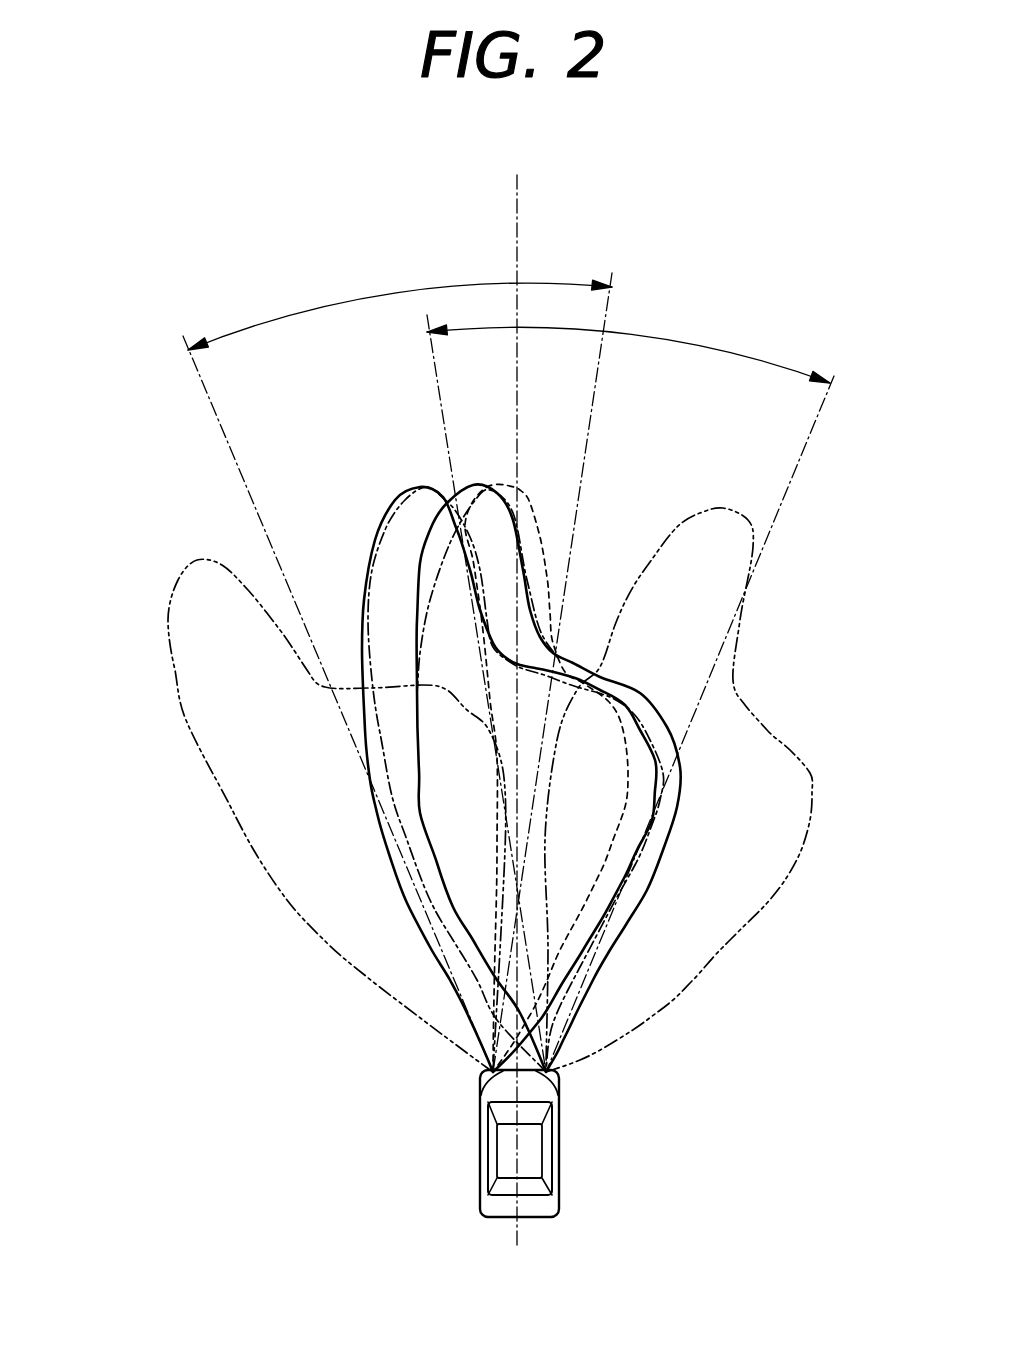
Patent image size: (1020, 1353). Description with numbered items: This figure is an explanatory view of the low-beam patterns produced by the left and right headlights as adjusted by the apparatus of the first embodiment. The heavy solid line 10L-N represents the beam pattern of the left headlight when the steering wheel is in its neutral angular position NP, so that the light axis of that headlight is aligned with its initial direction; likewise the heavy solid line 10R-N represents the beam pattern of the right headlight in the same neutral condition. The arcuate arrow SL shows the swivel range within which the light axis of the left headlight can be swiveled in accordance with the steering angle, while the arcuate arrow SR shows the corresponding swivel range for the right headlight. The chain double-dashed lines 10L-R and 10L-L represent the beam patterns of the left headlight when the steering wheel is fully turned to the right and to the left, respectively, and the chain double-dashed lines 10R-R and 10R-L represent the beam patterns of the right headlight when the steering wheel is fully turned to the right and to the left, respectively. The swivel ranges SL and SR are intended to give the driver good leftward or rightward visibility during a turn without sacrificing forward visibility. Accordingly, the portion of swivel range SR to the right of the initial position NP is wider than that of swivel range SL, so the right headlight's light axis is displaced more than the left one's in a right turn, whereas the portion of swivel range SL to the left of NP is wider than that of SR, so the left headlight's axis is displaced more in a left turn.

The neutral angular position NP is at (518, 688).
The swivel range SL is at (362, 298).
The swivel range SR is at (712, 347).
The beam pattern 10L-N is at (415, 488).
The beam pattern 10R-N is at (510, 488).
The beam pattern 10R-L is at (433, 480).
The beam pattern 10L-R is at (527, 497).
The beam pattern 10L-L is at (181, 693).
The beam pattern 10R-R is at (752, 597).